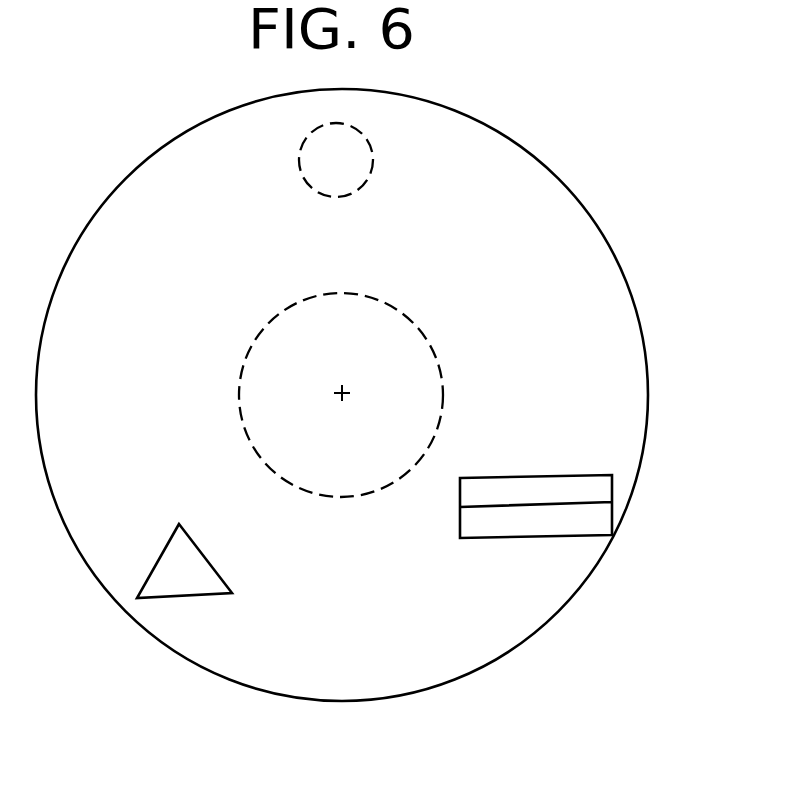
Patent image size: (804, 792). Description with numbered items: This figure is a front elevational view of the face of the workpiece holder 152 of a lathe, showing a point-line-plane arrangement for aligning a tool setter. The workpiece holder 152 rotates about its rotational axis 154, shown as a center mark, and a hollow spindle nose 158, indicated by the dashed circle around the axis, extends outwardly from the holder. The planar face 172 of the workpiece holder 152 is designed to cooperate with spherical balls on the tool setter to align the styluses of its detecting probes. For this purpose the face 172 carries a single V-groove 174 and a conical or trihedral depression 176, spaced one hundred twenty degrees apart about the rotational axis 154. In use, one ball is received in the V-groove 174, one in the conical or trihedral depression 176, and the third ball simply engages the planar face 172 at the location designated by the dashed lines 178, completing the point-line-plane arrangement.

The workpiece holder 152 is at (646, 373).
The rotational axis 154 is at (343, 393).
The spindle nose 158 is at (407, 313).
The planar face 172 is at (590, 279).
The V-groove 174 is at (568, 538).
The conical or trihedral depression 176 is at (215, 595).
The dashed lines 178 is at (372, 147).